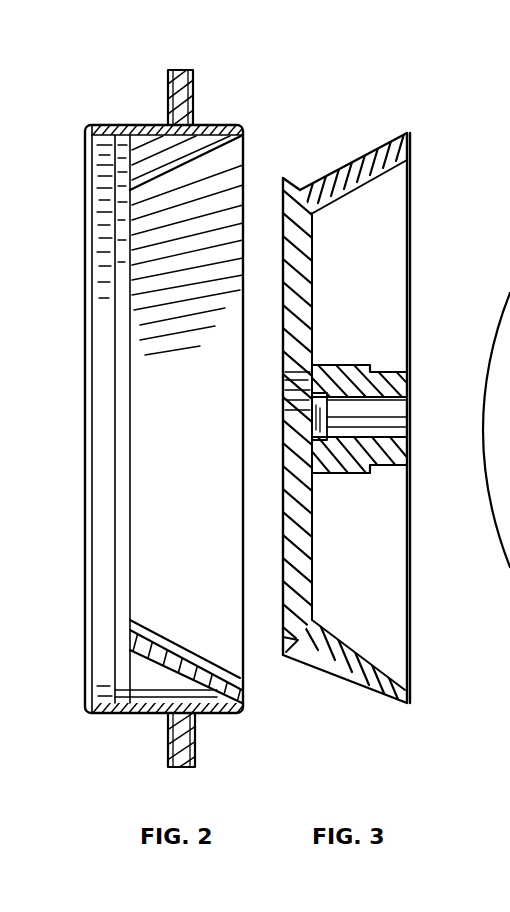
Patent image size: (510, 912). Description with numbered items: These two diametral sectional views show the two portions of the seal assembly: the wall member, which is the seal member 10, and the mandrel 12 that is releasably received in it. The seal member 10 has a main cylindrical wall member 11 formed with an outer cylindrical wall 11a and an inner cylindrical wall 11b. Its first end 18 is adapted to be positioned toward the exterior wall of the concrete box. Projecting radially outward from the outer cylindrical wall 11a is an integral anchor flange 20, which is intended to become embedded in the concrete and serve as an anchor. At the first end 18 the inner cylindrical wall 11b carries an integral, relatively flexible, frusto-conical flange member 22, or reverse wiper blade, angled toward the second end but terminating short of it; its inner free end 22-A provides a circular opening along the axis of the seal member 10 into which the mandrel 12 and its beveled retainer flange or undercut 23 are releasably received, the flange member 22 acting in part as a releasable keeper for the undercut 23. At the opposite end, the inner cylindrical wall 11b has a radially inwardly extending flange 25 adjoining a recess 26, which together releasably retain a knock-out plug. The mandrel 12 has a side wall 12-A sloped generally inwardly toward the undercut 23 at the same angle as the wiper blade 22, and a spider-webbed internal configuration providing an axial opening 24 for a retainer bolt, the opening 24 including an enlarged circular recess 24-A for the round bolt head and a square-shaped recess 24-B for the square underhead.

In FIG. 2, the seal member 10 is at (239, 741).
In FIG. 2, the main cylindrical wall member 11 is at (220, 122).
In FIG. 2, the outer cylindrical wall 11a is at (138, 122).
In FIG. 2, the inner cylindrical wall 11b is at (166, 132).
In FIG. 3, the mandrel 12 is at (418, 255).
In FIG. 3, the side wall of mandrel 12-A is at (393, 143).
In FIG. 2, the first end 18 is at (244, 129).
In FIG. 2, the anchor flange 20 is at (168, 747).
In FIG. 2, the frusto-conical flange member 22 is at (128, 205).
In FIG. 2, the inner free end of flange 22-A is at (243, 195).
In FIG. 3, the beveled retainer flange or undercut portion 23 is at (298, 655).
In FIG. 3, the axial opening 24 is at (387, 400).
In FIG. 3, the enlarged circular recess 24-A is at (283, 480).
In FIG. 3, the square-shaped recess 24-B is at (318, 393).
In FIG. 2, the radially inwardly extending flange 25 is at (86, 138).
In FIG. 2, the recess 26 is at (107, 697).